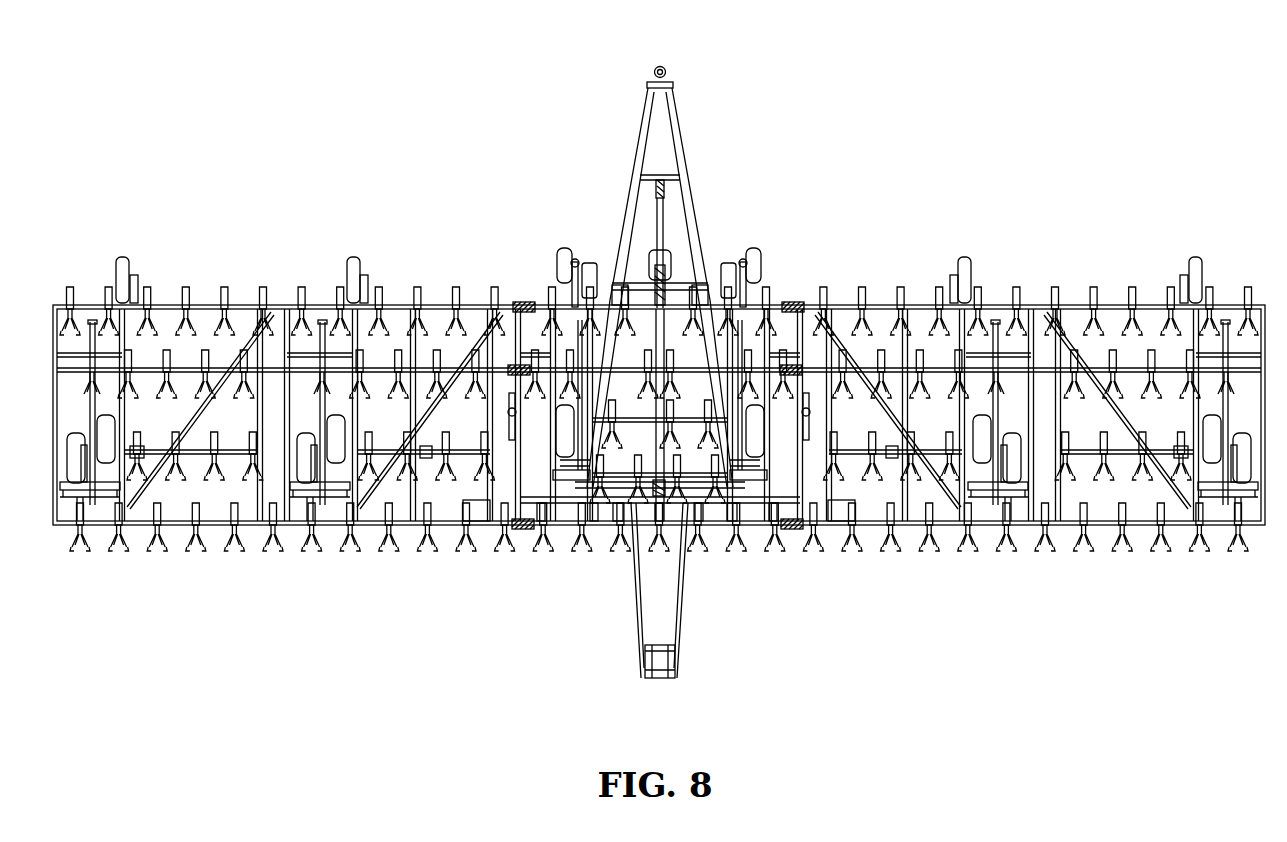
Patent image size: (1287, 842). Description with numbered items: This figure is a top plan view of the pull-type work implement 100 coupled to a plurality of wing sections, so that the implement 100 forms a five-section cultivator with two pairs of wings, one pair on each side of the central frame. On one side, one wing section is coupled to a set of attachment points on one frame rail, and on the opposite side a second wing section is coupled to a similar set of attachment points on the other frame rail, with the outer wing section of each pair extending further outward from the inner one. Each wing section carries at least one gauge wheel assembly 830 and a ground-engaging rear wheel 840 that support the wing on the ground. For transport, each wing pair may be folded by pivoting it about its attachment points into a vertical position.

The pull-type work implement 100 is at (777, 53).
The gauge wheel assembly 830 is at (119, 270).
The ground-engaging rear wheel 840 is at (92, 455).